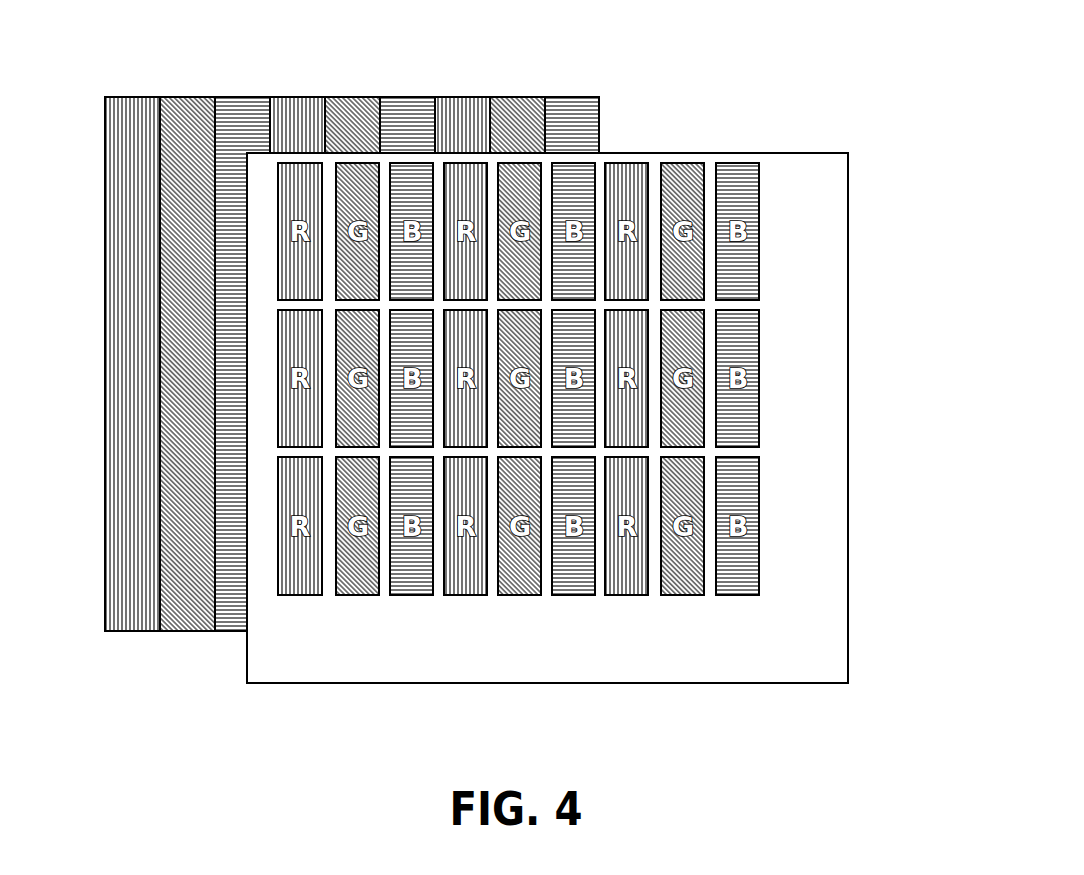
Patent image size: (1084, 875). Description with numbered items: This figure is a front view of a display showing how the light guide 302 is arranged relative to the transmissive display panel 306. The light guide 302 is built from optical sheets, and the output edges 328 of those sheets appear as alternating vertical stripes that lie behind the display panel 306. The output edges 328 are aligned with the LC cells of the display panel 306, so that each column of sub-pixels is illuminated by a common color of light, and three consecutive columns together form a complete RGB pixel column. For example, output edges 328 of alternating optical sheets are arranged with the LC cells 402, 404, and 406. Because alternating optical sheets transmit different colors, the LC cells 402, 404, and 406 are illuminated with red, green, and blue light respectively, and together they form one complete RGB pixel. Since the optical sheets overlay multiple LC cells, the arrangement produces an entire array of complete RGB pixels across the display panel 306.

The light guide 302 is at (318, 320).
The output edges 328 is at (105, 347).
The transmissive display panel 306 is at (848, 519).
The LC cell 402 is at (632, 163).
The LC cell 404 is at (688, 163).
The LC cell 406 is at (743, 163).